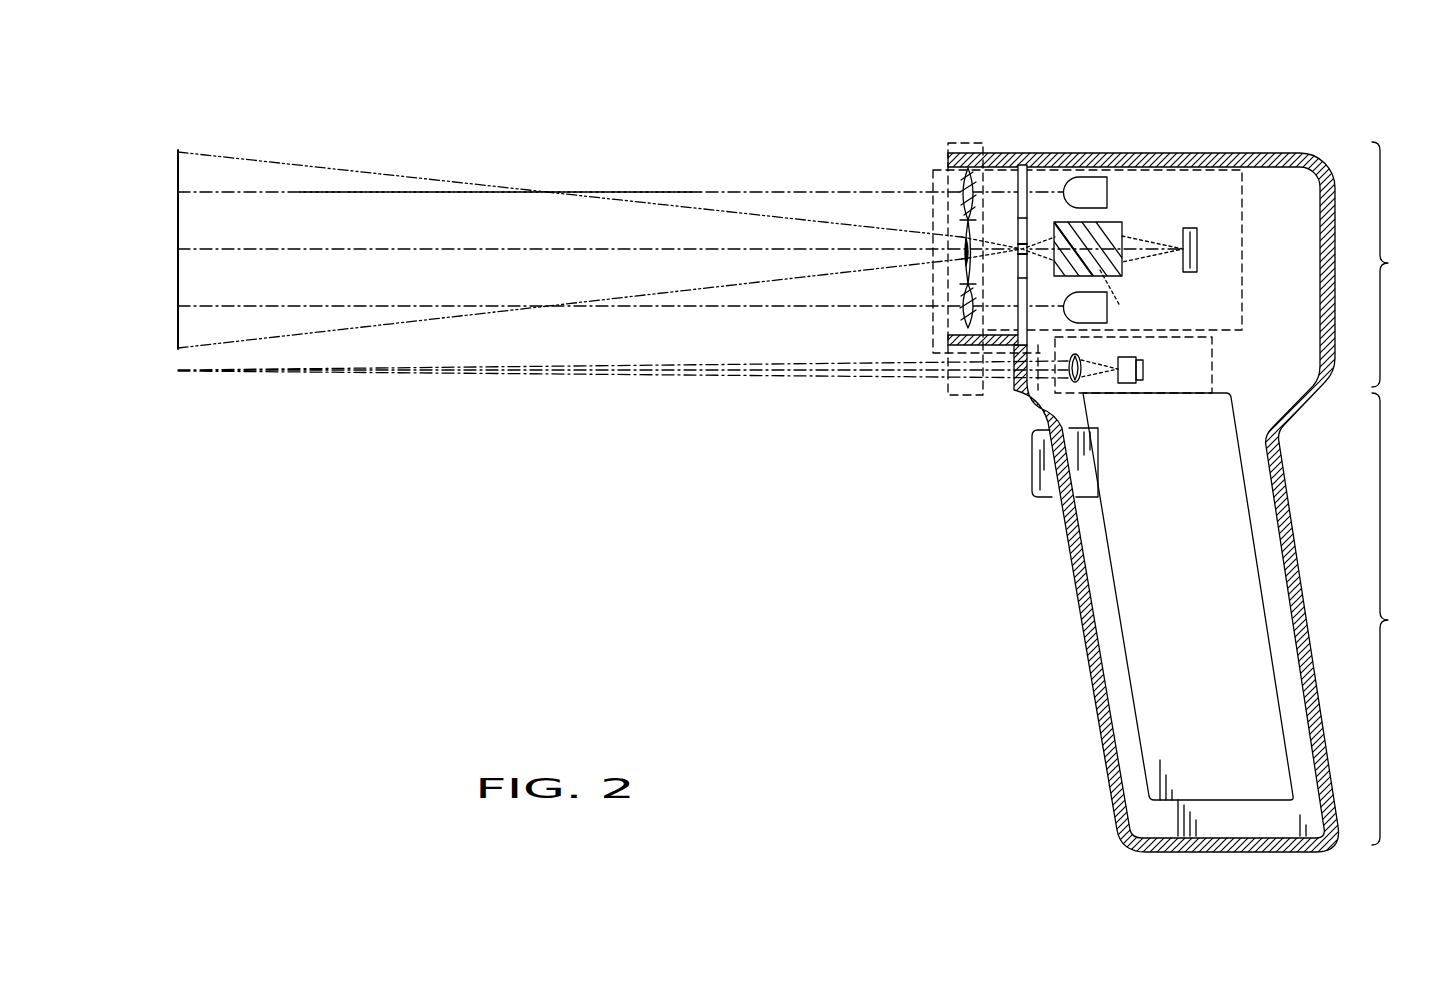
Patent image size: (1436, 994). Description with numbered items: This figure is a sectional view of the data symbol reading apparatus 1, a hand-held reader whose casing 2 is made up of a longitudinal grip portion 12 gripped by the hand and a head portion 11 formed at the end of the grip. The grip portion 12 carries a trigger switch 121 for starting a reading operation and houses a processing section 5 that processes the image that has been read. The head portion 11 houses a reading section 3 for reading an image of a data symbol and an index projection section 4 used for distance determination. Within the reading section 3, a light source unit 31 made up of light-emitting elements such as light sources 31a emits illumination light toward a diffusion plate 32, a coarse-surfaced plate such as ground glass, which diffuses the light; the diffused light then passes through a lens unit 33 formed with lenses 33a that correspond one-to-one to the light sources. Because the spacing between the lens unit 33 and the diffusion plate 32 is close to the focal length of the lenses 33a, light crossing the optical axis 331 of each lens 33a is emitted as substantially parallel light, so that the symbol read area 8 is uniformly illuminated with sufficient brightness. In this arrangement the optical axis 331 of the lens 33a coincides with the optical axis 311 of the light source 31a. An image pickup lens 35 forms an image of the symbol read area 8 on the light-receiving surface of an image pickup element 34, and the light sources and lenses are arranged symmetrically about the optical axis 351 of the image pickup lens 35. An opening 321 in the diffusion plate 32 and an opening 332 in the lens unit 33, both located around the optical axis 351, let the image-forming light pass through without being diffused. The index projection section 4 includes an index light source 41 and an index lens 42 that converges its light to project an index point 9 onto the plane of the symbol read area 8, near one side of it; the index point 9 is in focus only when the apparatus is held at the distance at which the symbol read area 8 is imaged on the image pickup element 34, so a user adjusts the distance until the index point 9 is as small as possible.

The data symbol reading apparatus 1 is at (1186, 102).
The casing 2 is at (1268, 153).
The reading section 3 is at (1242, 215).
The index projection section 4 is at (1160, 387).
The processing section 5 is at (1140, 642).
The symbol read area 8 is at (178, 253).
The index point 9 is at (179, 373).
The head portion 11 is at (1404, 264).
The grip portion 12 is at (1404, 619).
The light source unit 31 is at (1100, 212).
The light source 31a is at (1108, 194).
The diffusion plate 32 is at (1018, 190).
The lens unit 33 is at (911, 300).
The lens 33a is at (956, 185).
The image pickup element 34 is at (1190, 270).
The image pickup lens 35 is at (1122, 242).
The index light source 41 is at (1143, 370).
The index lens 42 is at (1085, 382).
The trigger switch 121 is at (1040, 495).
The optical axis of light source 311 is at (1036, 186).
The opening 321 is at (960, 240).
The optical axis of lens 331 is at (738, 191).
The opening 332 is at (958, 285).
The optical axis of image pickup lens 351 is at (556, 225).